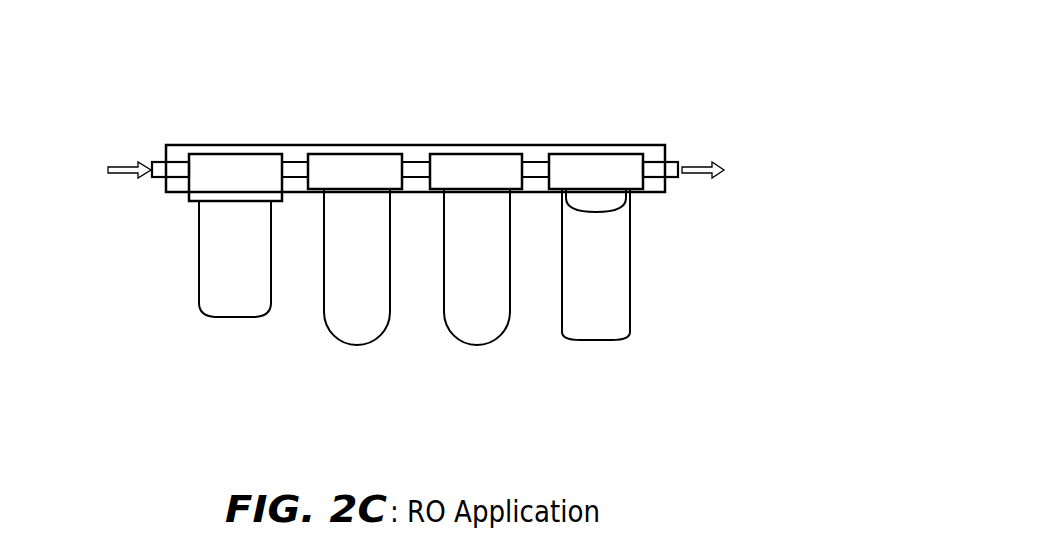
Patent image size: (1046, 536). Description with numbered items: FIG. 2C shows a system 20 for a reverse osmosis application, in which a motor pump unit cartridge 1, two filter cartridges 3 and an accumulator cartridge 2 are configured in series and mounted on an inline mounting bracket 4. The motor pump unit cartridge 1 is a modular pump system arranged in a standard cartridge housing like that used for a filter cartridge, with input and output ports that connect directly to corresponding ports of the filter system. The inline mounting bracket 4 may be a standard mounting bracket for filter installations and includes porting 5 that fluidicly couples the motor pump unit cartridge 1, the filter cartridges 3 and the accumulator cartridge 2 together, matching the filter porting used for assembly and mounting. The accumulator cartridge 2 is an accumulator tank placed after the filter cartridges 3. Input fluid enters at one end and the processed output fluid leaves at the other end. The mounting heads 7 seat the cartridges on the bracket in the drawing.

The system 20 is at (723, 87).
The motor pump unit cartridge 1 is at (225, 317).
The accumulator cartridge 2 is at (598, 342).
The filter cartridges 3 is at (372, 340).
The inline mounting bracket 4 is at (535, 145).
The porting 5 is at (160, 180).
The mounting heads 7 is at (227, 154).